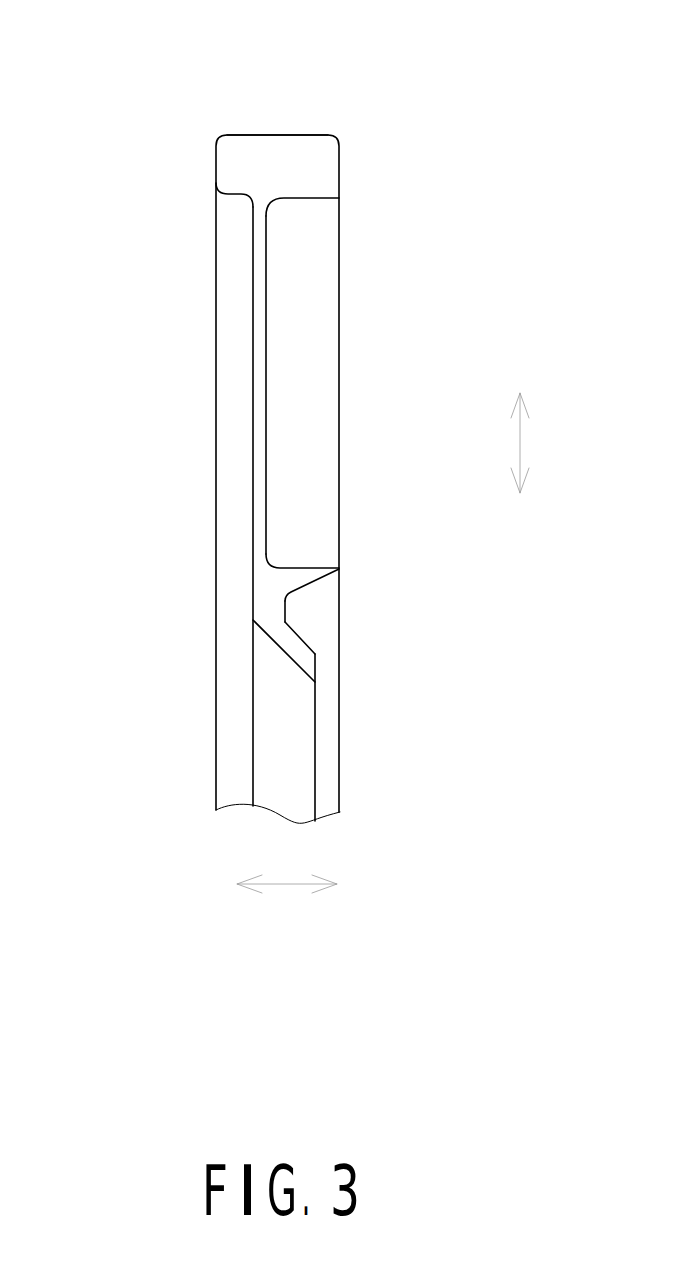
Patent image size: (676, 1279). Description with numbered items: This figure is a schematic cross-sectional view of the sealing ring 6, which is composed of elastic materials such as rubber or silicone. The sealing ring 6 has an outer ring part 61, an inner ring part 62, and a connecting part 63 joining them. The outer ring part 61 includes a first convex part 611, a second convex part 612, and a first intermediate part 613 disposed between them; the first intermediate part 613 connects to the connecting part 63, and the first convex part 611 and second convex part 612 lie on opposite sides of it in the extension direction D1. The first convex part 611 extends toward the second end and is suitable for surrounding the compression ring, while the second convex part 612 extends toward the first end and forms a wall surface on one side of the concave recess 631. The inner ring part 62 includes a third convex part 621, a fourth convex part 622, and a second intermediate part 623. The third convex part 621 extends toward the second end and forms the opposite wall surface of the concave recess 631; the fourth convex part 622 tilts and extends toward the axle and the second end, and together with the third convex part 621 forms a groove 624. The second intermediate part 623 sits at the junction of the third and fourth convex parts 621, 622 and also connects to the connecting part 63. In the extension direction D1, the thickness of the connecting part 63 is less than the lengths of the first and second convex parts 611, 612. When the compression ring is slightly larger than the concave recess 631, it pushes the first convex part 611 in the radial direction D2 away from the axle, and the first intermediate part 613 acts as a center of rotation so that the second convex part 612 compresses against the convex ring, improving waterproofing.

The sealing ring 6 is at (66, 42).
The outer ring part 61 is at (378, 50).
The first convex part 611 is at (327, 165).
The second convex part 612 is at (228, 165).
The first intermediate part 613 is at (278, 152).
The inner ring part 62 is at (465, 552).
The third convex part 621 is at (306, 573).
The fourth convex part 622 is at (298, 653).
The second intermediate part 623 is at (273, 608).
The groove 624 is at (310, 624).
The connecting part 63 is at (253, 378).
The concave recess 631 is at (307, 342).
The extension direction D1 is at (287, 902).
The radial direction D2 is at (538, 443).